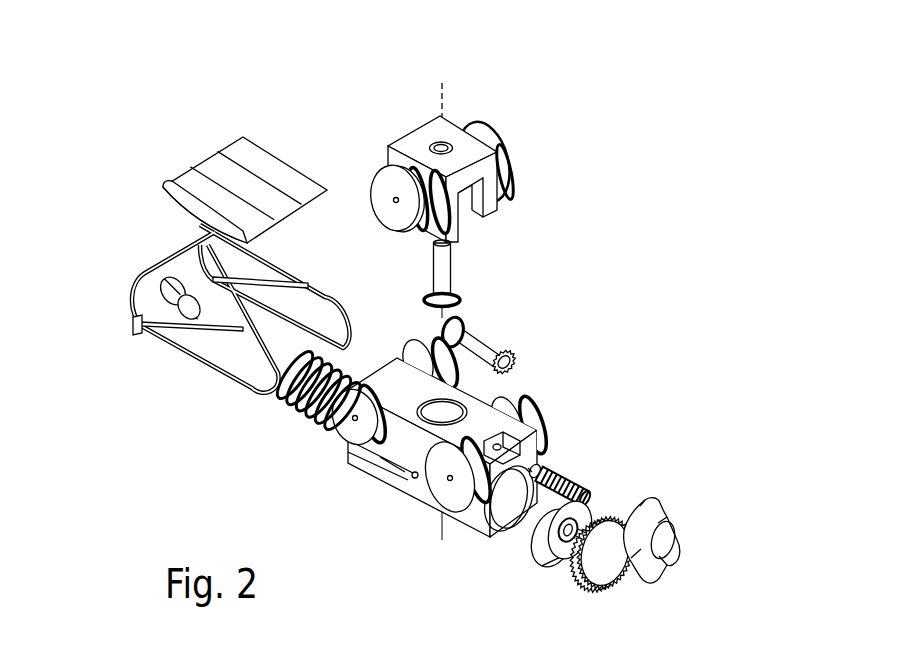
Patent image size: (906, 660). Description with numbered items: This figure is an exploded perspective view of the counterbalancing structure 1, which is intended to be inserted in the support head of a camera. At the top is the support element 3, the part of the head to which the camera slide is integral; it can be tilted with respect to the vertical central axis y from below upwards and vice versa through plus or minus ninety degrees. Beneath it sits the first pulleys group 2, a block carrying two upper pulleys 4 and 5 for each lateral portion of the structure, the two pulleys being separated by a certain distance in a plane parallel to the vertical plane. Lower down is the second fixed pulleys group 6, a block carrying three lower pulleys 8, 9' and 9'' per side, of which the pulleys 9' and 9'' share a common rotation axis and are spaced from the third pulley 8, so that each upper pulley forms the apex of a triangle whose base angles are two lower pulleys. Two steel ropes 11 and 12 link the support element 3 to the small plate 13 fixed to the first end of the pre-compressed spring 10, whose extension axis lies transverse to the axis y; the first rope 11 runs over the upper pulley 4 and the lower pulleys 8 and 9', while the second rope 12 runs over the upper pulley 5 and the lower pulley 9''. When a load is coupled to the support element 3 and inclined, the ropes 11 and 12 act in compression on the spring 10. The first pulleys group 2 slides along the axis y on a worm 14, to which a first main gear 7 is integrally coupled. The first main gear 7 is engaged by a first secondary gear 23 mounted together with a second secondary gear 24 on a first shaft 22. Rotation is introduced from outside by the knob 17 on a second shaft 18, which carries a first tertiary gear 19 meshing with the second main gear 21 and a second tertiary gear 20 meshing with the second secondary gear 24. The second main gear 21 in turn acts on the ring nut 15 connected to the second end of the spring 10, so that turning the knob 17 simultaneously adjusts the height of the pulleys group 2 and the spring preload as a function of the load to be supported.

The counterbalancing structure 1 is at (668, 205).
The first pulleys group 2 is at (395, 120).
The support element 3 is at (158, 190).
The upper pulley 4 is at (467, 120).
The upper pulley 5 is at (507, 175).
The second fixed pulleys group 6 is at (460, 523).
The first main gear 7 is at (463, 295).
The lower pulley 8 is at (420, 343).
The lower pulley 9' is at (487, 448).
The lower pulley 9'' is at (449, 448).
The spring 10 is at (287, 392).
The first rope 11 is at (288, 282).
The second rope 12 is at (243, 308).
The plate 13 is at (132, 325).
The worm 14 is at (450, 263).
The ring nut 15 is at (537, 543).
The knob 17 is at (657, 500).
The second shaft 18 is at (546, 478).
The first tertiary gear 19 is at (627, 517).
The second tertiary gear 20 is at (577, 492).
The second main gear 21 is at (580, 570).
The first shaft 22 is at (490, 345).
The first secondary gear 23 is at (468, 337).
The second secondary gear 24 is at (510, 350).
The vertical central axis y is at (443, 107).